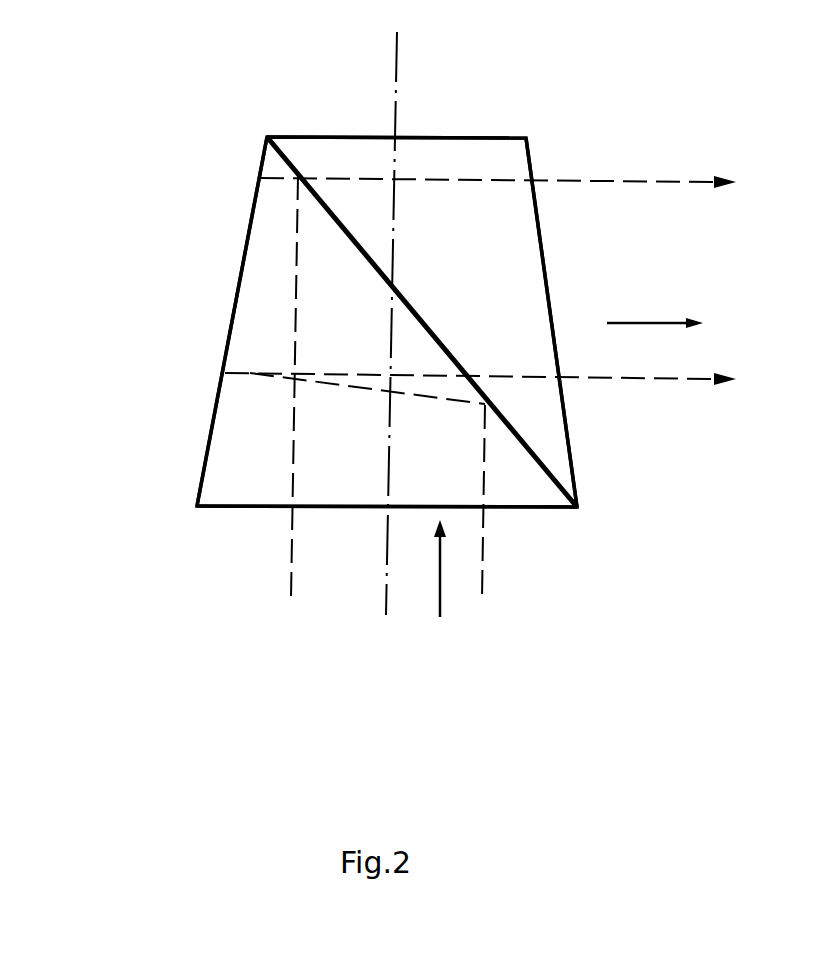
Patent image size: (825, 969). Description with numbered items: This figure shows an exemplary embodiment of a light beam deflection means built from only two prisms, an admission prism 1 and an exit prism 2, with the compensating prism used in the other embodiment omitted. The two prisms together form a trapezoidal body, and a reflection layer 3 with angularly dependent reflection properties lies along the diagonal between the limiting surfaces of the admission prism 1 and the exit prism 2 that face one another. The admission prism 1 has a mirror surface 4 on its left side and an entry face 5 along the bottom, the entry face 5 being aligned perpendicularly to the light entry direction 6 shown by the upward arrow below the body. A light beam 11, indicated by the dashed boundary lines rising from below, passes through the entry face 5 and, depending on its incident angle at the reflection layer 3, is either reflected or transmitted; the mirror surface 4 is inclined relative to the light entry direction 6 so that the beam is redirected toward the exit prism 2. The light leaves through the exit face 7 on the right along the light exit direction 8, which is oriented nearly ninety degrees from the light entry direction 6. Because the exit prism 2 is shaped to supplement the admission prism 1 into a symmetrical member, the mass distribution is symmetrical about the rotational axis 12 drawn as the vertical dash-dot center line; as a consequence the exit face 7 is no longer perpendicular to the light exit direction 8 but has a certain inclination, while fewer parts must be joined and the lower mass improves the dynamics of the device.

The admission prism 1 is at (243, 489).
The exit prism 2 is at (495, 155).
The reflection layer 3 is at (407, 298).
The mirror surface 4 is at (250, 218).
The entry face 5 is at (356, 508).
The light entry direction 6 is at (437, 577).
The exit face 7 is at (538, 221).
The light exit direction 8 is at (650, 325).
The light beam 11 is at (290, 548).
The rotational axis 12 is at (397, 55).